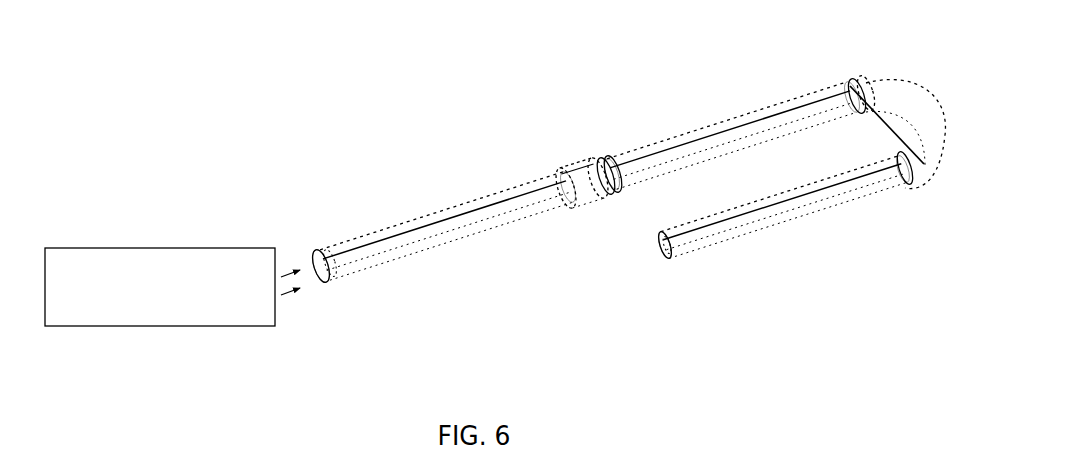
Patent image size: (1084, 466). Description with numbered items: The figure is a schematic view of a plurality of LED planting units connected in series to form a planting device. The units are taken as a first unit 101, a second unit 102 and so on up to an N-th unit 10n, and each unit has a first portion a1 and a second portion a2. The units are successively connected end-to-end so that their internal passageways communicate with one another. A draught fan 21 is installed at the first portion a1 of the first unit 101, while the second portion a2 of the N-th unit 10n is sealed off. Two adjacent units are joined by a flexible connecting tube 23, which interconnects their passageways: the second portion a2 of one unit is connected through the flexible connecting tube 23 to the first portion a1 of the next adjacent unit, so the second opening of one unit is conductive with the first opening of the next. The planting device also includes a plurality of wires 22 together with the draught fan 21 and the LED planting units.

The draught fan 21 is at (172, 287).
The first unit 101 is at (401, 214).
The second unit 102 is at (704, 121).
The N-th unit 10n is at (805, 232).
The wires 22 is at (588, 171).
The flexible connecting tube 23 is at (586, 198).
The first portion a1 is at (337, 244).
The second portion a2 is at (545, 224).